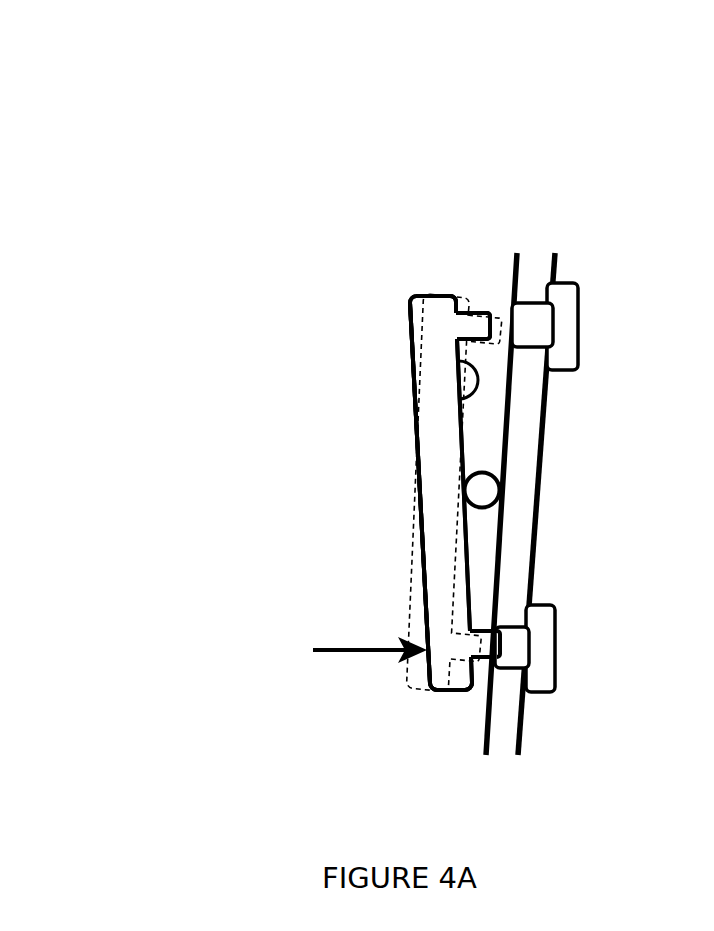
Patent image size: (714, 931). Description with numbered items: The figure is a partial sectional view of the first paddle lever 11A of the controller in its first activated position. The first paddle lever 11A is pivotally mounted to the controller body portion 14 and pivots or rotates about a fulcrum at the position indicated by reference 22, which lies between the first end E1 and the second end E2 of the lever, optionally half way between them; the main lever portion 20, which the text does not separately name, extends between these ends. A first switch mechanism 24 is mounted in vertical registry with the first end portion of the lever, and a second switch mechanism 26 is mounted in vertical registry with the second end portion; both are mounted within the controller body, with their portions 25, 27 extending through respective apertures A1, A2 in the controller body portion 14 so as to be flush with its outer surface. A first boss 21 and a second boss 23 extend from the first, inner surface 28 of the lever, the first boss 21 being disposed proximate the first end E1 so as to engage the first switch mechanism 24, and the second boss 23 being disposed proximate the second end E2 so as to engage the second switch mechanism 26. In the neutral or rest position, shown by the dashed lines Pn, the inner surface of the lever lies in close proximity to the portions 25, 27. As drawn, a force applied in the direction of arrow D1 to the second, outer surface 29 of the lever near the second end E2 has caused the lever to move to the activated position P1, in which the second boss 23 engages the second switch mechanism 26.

The first paddle lever 11A is at (339, 410).
The controller body portion 14 is at (528, 438).
The pivoting body 20 is at (428, 427).
The first protuberance or boss 21 is at (472, 307).
The fulcrum position 22 is at (488, 490).
The second protuberance or boss 23 is at (482, 658).
The first switch mechanism 24 is at (563, 333).
The portion of first switch mechanism 25 is at (537, 330).
The second switch mechanism 26 is at (555, 650).
The portion of second switch mechanism 27 is at (513, 645).
The first, inner surface 28 is at (465, 366).
The second, outer surface 29 is at (415, 515).
The first aperture A1 is at (512, 298).
The second aperture A2 is at (495, 623).
The direction arrow D1 is at (347, 651).
The first end E1 is at (420, 287).
The second end E2 is at (443, 703).
The activated position P1 is at (407, 317).
The neutral or rest position Pn is at (407, 688).